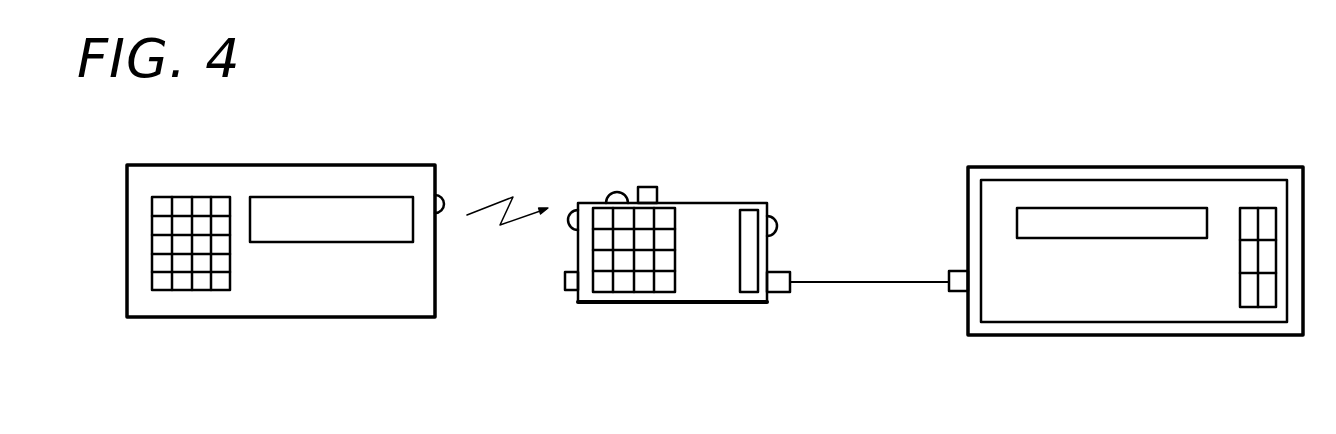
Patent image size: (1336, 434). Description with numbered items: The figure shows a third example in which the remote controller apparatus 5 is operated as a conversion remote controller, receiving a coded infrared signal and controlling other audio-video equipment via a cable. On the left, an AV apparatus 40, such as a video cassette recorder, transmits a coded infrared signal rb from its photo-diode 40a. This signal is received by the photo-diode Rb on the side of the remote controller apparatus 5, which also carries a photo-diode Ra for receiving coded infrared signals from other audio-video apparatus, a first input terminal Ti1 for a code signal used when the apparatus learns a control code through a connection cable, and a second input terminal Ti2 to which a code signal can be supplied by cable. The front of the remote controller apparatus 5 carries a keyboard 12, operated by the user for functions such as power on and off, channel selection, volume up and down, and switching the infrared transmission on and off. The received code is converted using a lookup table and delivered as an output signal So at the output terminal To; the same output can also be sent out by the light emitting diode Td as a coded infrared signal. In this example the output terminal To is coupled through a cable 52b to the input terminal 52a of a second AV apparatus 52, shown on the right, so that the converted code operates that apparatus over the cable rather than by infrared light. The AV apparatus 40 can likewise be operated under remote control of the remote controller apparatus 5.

The AV apparatus 40 is at (334, 159).
The photo-diode 40a is at (443, 212).
The coded infrared signal rb is at (507, 199).
The remote controller apparatus 5 is at (722, 198).
The keyboard 12 is at (681, 275).
The photo-diode Ra is at (612, 192).
The photo-diode Rb is at (573, 210).
The first input terminal Ti1 is at (652, 188).
The second input terminal Ti2 is at (575, 292).
The light emitting diode Td is at (777, 223).
The output terminal To is at (785, 293).
The output signal So is at (869, 267).
The cable 52b is at (866, 284).
The input terminal 52a is at (955, 295).
The AV apparatus 52 is at (1094, 156).